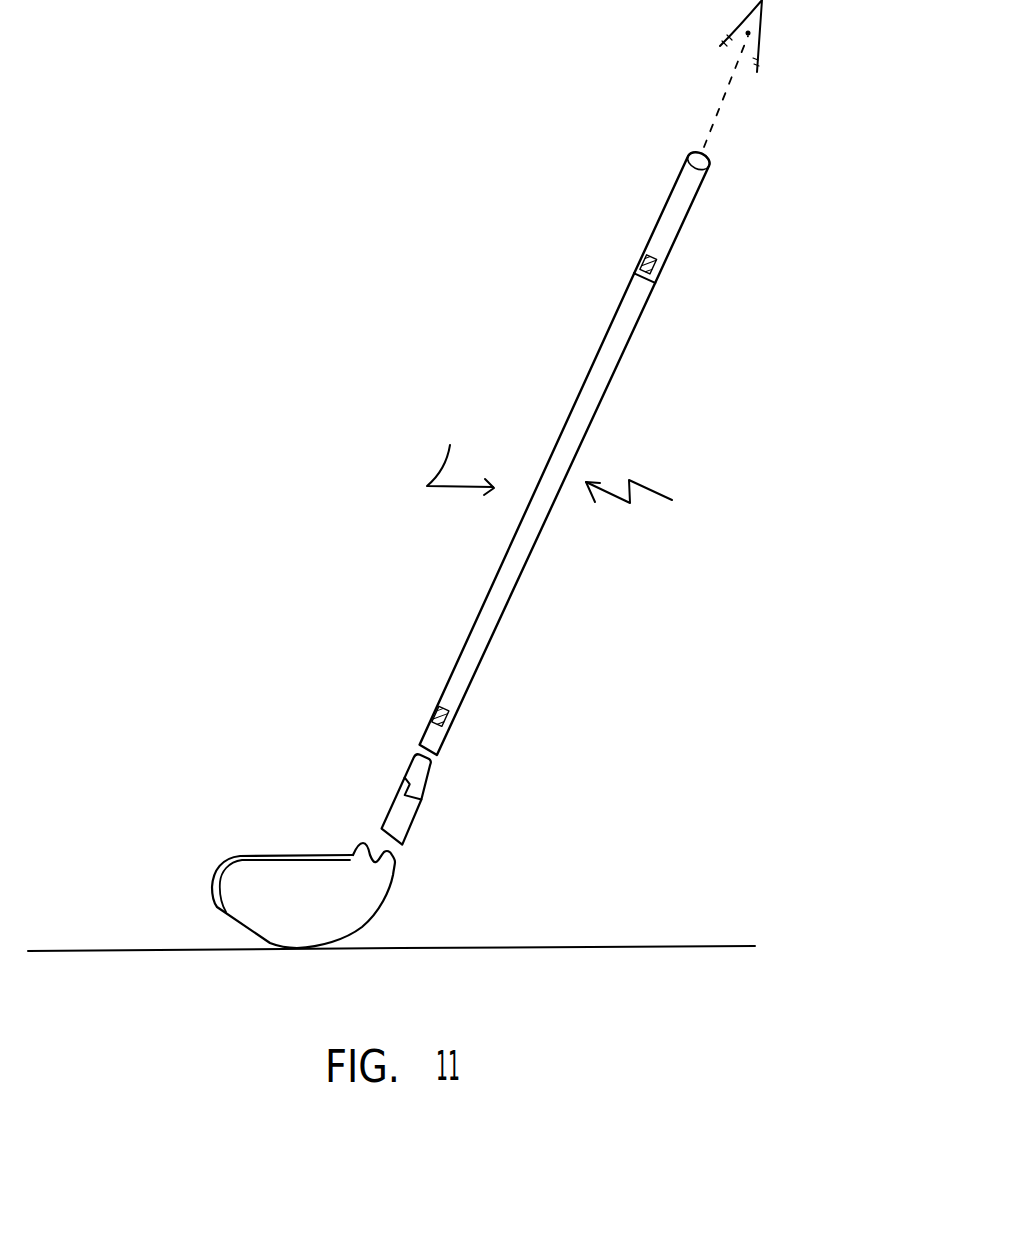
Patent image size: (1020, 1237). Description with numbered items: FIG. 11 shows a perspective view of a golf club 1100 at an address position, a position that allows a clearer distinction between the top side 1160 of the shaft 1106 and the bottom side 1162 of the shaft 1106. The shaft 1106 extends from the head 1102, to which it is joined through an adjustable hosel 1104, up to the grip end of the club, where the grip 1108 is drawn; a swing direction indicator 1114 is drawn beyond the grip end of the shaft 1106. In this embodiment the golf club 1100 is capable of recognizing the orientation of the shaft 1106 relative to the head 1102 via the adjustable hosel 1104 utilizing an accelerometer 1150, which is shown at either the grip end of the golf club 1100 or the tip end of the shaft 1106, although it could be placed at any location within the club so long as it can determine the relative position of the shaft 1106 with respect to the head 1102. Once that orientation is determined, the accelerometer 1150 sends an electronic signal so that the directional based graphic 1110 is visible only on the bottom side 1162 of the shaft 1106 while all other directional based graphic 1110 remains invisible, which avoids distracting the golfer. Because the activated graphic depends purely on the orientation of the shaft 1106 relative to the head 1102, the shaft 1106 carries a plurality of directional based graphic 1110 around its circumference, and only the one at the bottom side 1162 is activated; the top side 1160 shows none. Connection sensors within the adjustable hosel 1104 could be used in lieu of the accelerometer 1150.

The golf club 1100 is at (247, 240).
The head 1102 is at (276, 829).
The adjustable hosel 1104 is at (423, 802).
The shaft 1106 is at (493, 637).
The grip 1108 is at (692, 228).
The directional based graphic 1110 is at (553, 447).
The swing direction arrow 1114 is at (768, 30).
The accelerometer 1150 is at (660, 267).
The top side 1160 is at (444, 450).
The bottom side 1162 is at (670, 516).